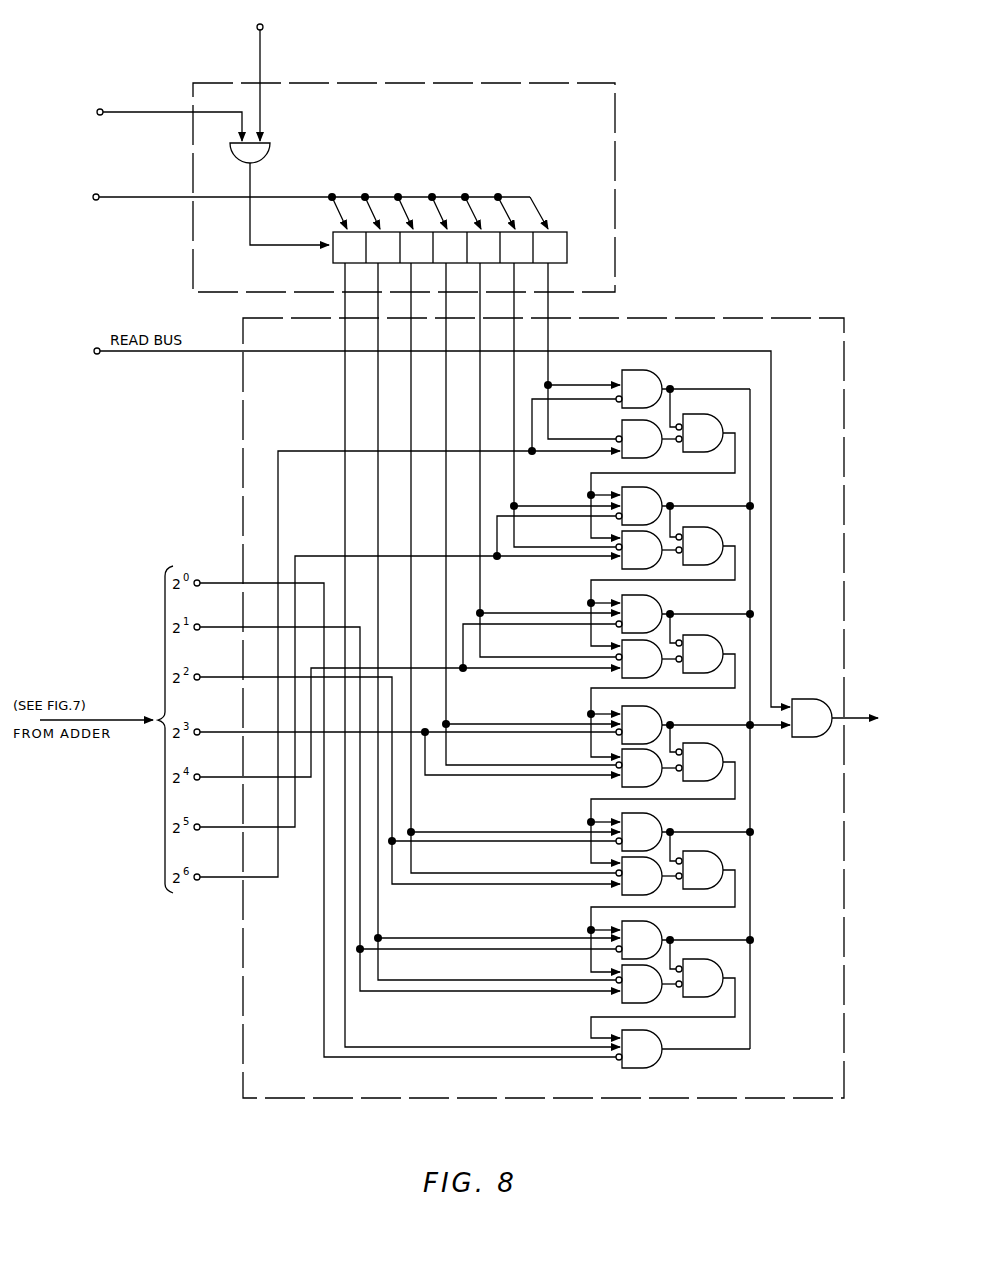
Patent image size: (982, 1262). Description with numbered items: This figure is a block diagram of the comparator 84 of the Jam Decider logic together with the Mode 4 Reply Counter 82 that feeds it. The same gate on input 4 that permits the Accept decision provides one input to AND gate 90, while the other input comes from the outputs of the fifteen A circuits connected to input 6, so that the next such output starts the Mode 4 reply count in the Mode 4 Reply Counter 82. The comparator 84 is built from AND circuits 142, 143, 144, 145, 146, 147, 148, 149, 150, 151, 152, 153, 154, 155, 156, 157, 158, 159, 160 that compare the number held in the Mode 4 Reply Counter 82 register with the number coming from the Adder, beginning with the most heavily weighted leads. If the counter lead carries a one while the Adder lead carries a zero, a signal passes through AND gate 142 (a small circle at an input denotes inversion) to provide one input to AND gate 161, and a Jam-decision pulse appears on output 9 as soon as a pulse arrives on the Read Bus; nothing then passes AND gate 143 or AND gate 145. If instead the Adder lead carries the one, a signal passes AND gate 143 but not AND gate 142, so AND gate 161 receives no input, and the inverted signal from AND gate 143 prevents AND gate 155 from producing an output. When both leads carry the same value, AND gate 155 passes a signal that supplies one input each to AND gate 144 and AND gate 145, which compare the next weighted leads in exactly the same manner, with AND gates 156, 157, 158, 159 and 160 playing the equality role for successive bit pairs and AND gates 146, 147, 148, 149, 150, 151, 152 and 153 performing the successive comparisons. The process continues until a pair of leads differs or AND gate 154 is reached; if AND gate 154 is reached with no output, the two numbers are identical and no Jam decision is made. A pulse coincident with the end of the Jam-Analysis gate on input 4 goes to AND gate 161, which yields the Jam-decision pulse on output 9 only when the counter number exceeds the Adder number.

The input 4 is at (162, 123).
The input 6 is at (259, 73).
The output 9 is at (863, 719).
The Mode 4 Reply Counter 82 is at (615, 150).
The comparator 84 is at (242, 1025).
The AND gate 90 is at (268, 151).
The AND gate 142 is at (686, 398).
The AND gate 143 is at (649, 439).
The AND gate 144 is at (688, 512).
The AND gate 145 is at (649, 550).
The AND gate 146 is at (688, 619).
The AND gate 147 is at (649, 659).
The AND gate 148 is at (706, 729).
The AND gate 149 is at (649, 768).
The AND gate 150 is at (688, 837).
The AND gate 151 is at (649, 876).
The AND gate 152 is at (688, 945).
The AND gate 153 is at (649, 984).
The AND gate 154 is at (686, 1049).
The AND gate 155 is at (661, 476).
The AND gate 156 is at (661, 586).
The AND gate 157 is at (661, 696).
The AND gate 158 is at (661, 803).
The AND gate 159 is at (661, 911).
The AND gate 160 is at (663, 998).
The AND gate 161 is at (812, 718).